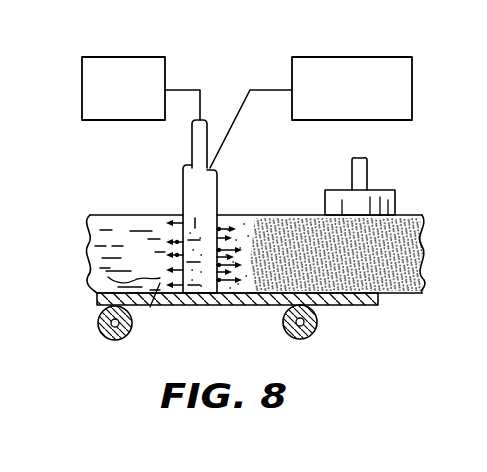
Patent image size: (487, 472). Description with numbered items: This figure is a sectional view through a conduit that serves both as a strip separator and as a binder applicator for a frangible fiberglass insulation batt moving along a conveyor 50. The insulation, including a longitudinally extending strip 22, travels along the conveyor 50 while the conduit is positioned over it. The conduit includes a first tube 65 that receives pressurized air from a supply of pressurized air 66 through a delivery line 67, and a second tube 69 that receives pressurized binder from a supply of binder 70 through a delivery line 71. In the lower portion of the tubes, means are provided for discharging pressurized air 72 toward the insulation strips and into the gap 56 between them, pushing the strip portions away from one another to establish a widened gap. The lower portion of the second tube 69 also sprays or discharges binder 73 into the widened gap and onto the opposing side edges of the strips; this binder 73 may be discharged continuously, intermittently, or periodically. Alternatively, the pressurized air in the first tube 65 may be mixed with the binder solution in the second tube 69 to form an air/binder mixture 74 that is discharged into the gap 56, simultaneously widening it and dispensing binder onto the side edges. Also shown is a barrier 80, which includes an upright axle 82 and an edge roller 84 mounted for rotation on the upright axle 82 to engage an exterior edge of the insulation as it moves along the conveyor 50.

The strip 22 is at (113, 218).
The conveyor 50 is at (407, 320).
The gap 56 is at (108, 250).
The first tube 65 is at (192, 147).
The supply of pressurized air 66 is at (155, 67).
The delivery line 67 is at (198, 107).
The second tube 69 is at (208, 192).
The supply of binder 70 is at (412, 83).
The delivery line 71 is at (240, 117).
The pressurized air 72 is at (171, 212).
The binder 73 is at (223, 222).
The air/binder mixture 74 is at (146, 308).
The barrier 80 is at (382, 186).
The upright axle 82 is at (353, 170).
The edge roller 84 is at (325, 200).